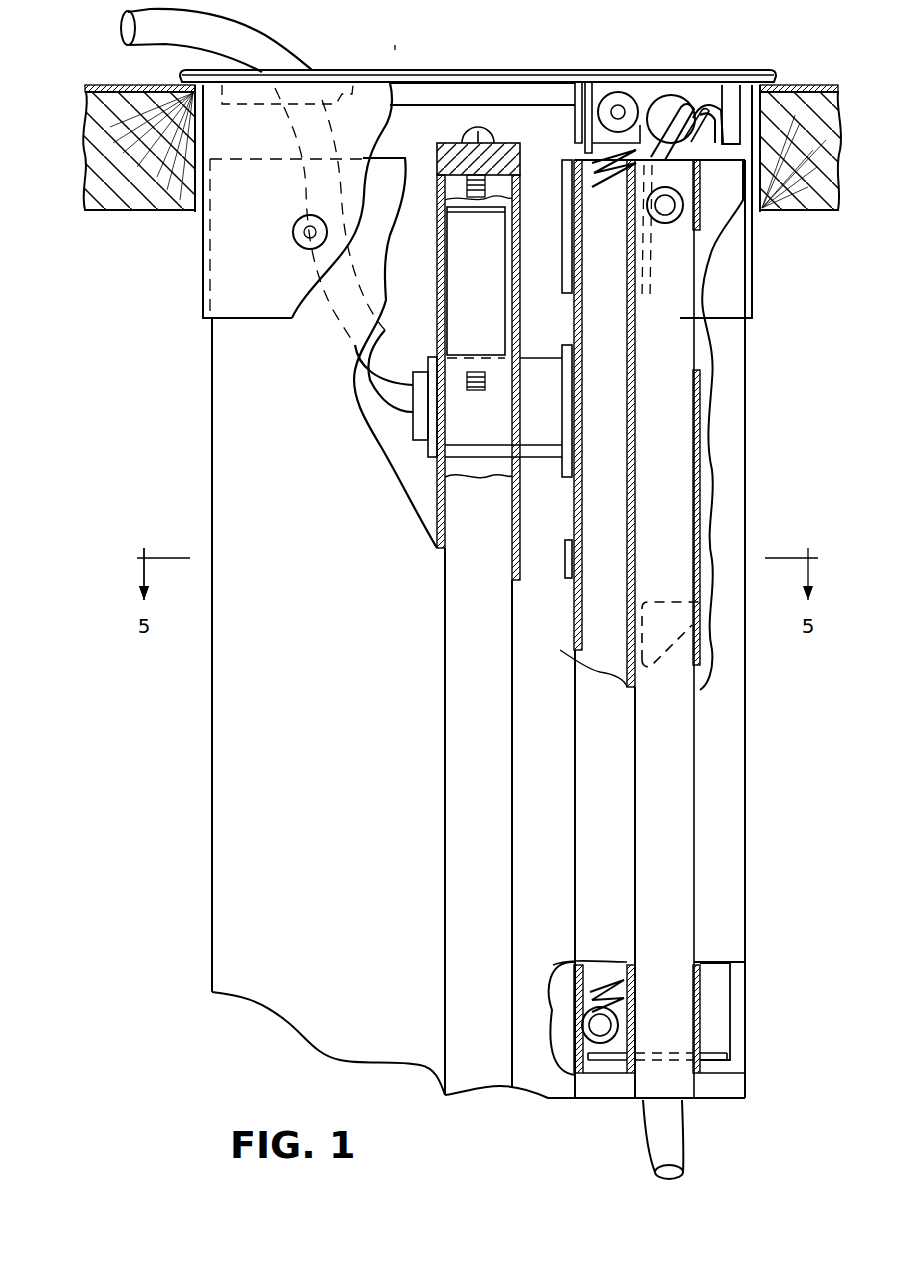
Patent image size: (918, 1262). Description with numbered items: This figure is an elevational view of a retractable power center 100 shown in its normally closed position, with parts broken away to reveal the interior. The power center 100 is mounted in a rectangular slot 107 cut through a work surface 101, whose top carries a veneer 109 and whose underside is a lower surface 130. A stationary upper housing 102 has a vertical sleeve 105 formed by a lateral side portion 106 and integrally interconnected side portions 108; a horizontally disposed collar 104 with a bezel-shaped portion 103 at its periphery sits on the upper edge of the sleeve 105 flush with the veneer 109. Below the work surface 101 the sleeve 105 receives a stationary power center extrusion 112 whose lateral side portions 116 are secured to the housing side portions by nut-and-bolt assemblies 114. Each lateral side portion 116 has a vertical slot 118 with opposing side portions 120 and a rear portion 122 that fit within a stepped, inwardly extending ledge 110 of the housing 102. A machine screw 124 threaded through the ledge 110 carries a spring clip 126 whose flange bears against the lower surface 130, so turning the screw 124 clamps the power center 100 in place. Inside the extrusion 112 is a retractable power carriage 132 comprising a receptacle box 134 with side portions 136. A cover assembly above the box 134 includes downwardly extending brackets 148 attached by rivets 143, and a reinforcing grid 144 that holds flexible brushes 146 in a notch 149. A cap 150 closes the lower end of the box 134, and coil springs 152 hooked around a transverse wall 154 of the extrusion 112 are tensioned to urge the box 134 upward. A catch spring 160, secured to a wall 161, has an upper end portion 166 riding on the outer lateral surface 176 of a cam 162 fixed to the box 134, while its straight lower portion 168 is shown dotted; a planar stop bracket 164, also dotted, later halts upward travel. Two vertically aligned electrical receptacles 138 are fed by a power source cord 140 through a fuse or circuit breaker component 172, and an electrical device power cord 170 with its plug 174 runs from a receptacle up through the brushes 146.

The retractable power center 100 is at (740, 36).
The work surface 101 is at (105, 212).
The upper housing 102 is at (385, 60).
The bezel-shaped portion 103 is at (185, 72).
The collar 104 is at (485, 70).
The sleeve 105 is at (201, 298).
The lateral side portion 106 is at (238, 277).
The slot 107 is at (197, 213).
The side portion 108 is at (201, 262).
The veneer 109 is at (108, 85).
The inwardly extending ledge 110 is at (500, 160).
The power center extrusion 112 is at (200, 742).
The nut-and-bolt assembly 114 is at (295, 223).
The lateral side portion 116 is at (310, 709).
The slot 118 is at (462, 605).
The side portion 120 is at (437, 232).
The rear portion 122 is at (455, 532).
The machine screw 124 is at (462, 133).
The spring clip 126 is at (460, 305).
The lower surface 130 is at (145, 212).
The power carriage 132 is at (610, 1075).
The receptacle box 134 is at (737, 87).
The side portion 136 is at (652, 112).
The electrical receptacle 138 is at (562, 212).
The power source cord 140 is at (685, 1158).
The rivet 143 is at (608, 102).
The reinforcing grid 144 is at (427, 95).
The flexible brushes 146 is at (262, 107).
The bracket 148 is at (678, 95).
The notch 149 is at (345, 80).
The cap 150 is at (727, 1060).
The coil spring 152 is at (608, 182).
The wall 154 is at (630, 255).
The catch spring 160 is at (695, 135).
The wall 161 is at (643, 467).
The cam 162 is at (661, 95).
The stop bracket 164 is at (676, 600).
The upper end portion 166 is at (700, 100).
The lower portion 168 is at (648, 300).
The power cord 170 is at (248, 32).
The fuse or circuit breaker component 172 is at (566, 582).
The plug 174 is at (413, 432).
The outer lateral surface 176 is at (647, 137).